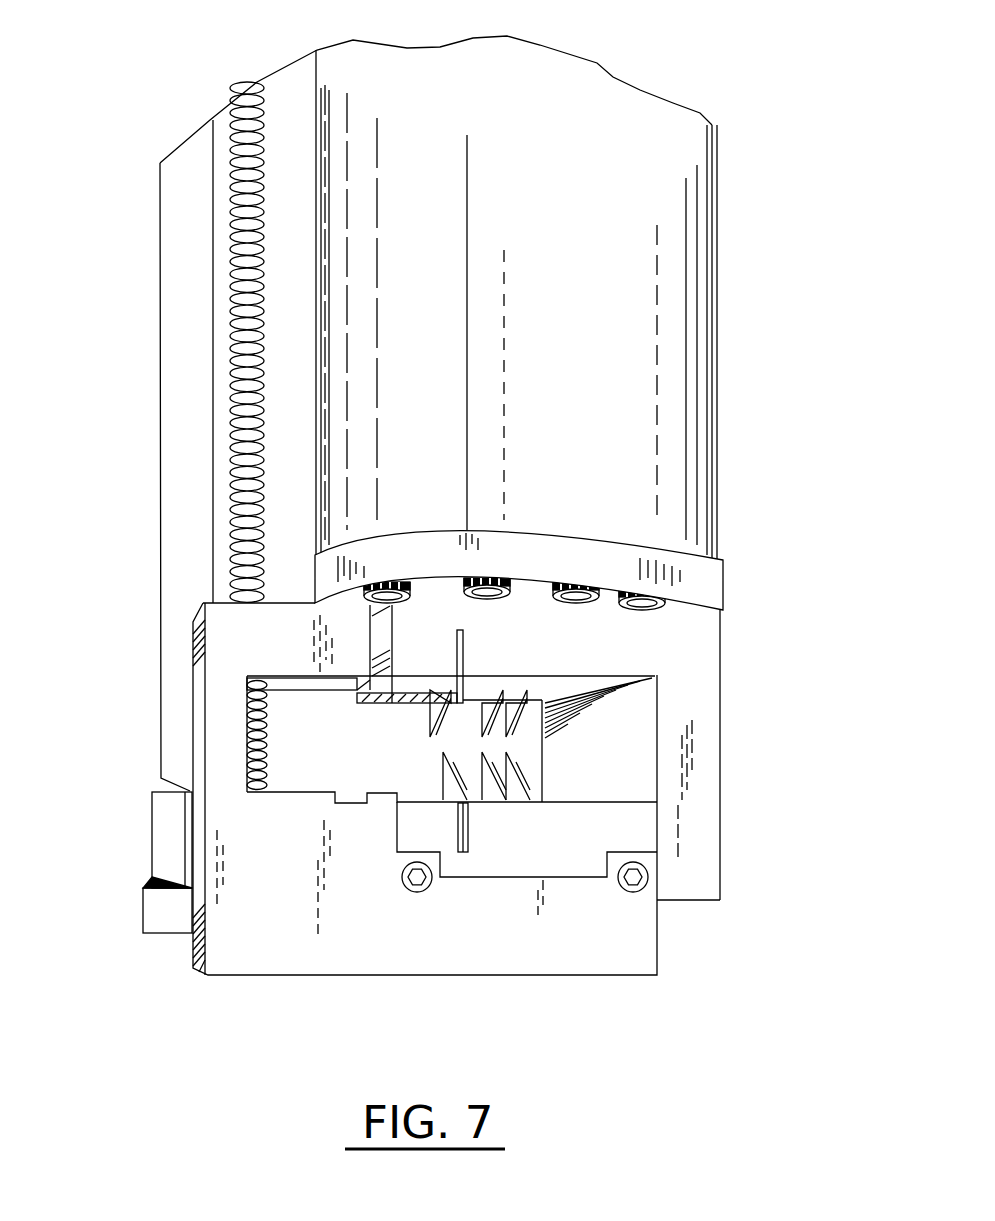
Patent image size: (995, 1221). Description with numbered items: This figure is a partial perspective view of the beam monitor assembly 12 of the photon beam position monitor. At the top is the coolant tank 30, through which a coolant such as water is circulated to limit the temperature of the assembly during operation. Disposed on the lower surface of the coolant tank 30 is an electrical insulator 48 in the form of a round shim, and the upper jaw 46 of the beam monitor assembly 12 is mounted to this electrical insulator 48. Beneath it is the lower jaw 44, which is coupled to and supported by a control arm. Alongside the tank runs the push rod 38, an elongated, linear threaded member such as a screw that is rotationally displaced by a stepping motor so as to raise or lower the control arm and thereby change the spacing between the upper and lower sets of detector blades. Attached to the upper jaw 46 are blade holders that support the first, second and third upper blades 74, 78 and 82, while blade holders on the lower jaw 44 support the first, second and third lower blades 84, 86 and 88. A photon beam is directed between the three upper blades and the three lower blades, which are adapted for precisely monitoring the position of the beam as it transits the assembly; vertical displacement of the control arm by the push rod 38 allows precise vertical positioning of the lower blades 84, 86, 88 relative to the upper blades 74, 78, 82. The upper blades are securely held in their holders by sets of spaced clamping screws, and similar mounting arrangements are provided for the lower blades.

The beam monitor assembly 12 is at (738, 766).
The coolant tank 30 is at (606, 273).
The push rod 38 is at (228, 365).
The lower jaw 44 is at (597, 833).
The upper jaw 46 is at (655, 657).
The electrical insulator 48 is at (708, 587).
The first upper blade 74 is at (446, 708).
The second upper blade 78 is at (490, 707).
The third upper blade 82 is at (518, 700).
The first lower blade 84 is at (445, 779).
The second lower blade 86 is at (490, 793).
The third lower blade 88 is at (516, 795).